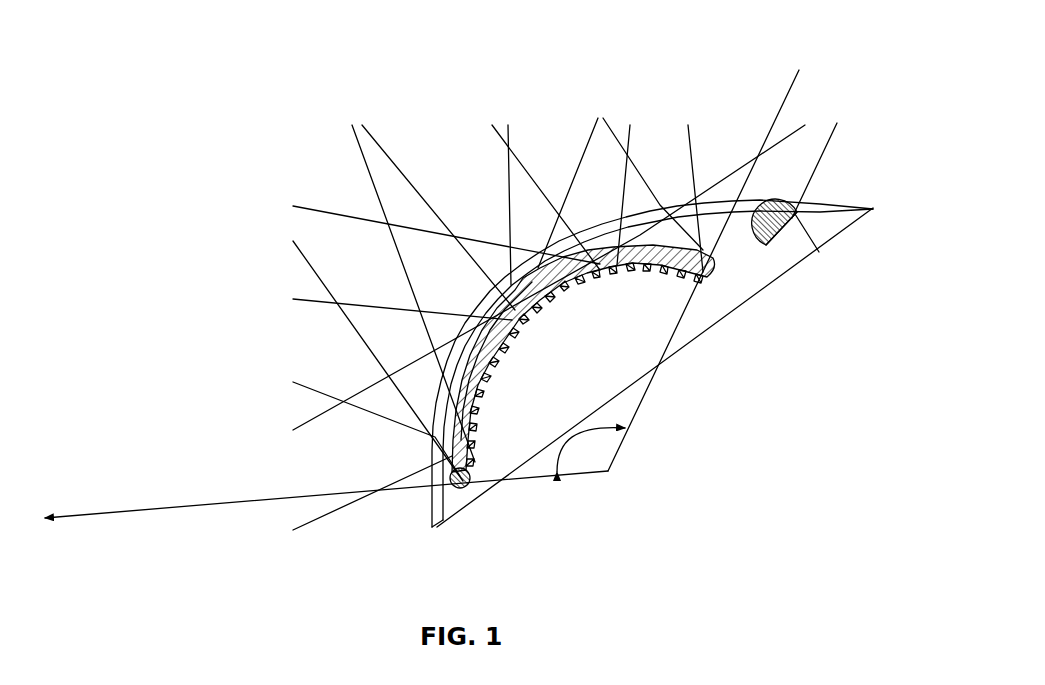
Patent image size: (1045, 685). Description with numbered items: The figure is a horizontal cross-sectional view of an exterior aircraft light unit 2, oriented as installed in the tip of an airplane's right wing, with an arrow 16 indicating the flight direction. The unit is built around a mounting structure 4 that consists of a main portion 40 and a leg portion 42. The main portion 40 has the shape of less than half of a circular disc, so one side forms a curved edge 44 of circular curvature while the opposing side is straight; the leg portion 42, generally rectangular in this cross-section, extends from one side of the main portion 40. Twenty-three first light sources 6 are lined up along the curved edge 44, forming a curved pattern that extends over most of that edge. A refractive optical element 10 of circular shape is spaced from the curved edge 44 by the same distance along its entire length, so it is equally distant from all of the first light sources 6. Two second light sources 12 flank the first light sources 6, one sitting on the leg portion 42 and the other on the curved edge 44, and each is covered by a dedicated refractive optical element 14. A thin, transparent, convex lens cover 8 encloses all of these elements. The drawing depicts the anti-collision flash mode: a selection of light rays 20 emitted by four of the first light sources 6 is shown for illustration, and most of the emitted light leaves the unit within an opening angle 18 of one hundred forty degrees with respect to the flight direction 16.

The exterior aircraft light unit 2 is at (425, 125).
The mounting structure 4 is at (713, 327).
The first light sources 6 is at (643, 270).
The lens cover 8 is at (837, 203).
The refractive optical element 10 is at (627, 246).
The second light sources 12 is at (473, 478).
The dedicated refractive optical element 14 is at (797, 203).
The arrow indicating flight direction 16 is at (200, 505).
The opening angle 18 is at (572, 438).
The light rays 20 is at (320, 298).
The main portion 40 is at (606, 379).
The leg portion 42 is at (775, 238).
The curved edge 44 is at (560, 287).